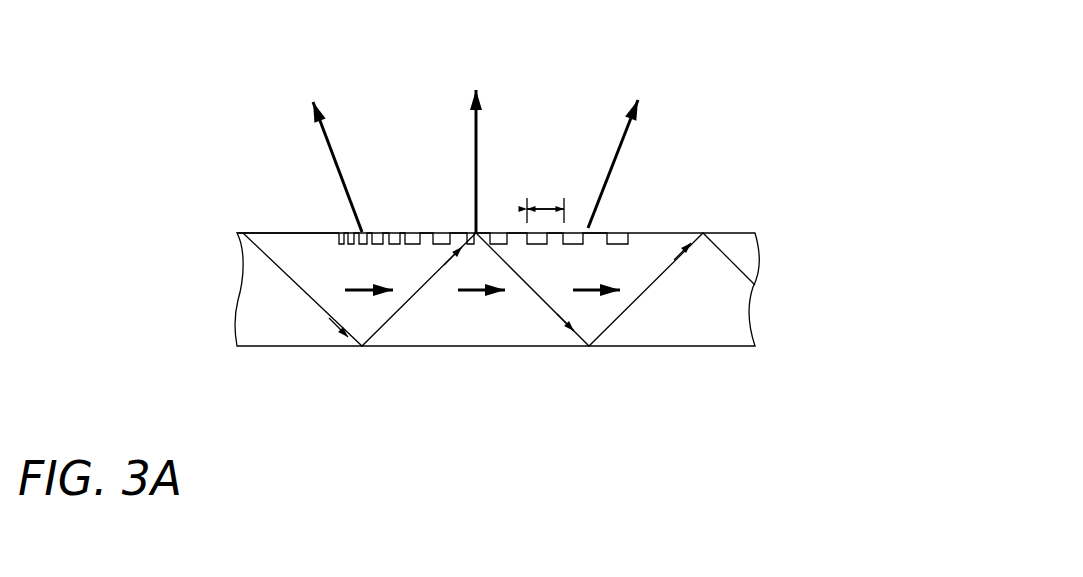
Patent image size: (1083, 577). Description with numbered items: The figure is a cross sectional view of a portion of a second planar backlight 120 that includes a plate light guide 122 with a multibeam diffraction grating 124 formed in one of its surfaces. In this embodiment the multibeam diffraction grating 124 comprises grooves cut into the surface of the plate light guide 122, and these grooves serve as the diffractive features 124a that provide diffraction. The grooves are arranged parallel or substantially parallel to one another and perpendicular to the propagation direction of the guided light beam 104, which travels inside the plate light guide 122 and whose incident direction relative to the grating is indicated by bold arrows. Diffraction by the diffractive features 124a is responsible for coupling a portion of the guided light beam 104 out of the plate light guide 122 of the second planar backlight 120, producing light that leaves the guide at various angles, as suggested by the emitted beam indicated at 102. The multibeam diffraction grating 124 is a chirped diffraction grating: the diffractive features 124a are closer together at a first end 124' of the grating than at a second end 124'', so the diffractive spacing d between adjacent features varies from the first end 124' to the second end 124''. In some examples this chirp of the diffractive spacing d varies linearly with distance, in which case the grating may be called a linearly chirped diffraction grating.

The second planar backlight 120 is at (784, 69).
The plate light guide 122 is at (753, 287).
The multibeam diffraction grating 124 is at (491, 185).
The first end 124' is at (321, 211).
The second end 124'' is at (644, 211).
The diffractive features 124a is at (427, 220).
The output light beam 102 is at (657, 152).
The guided light beam 104 is at (643, 313).
The diffractive spacing d is at (543, 200).